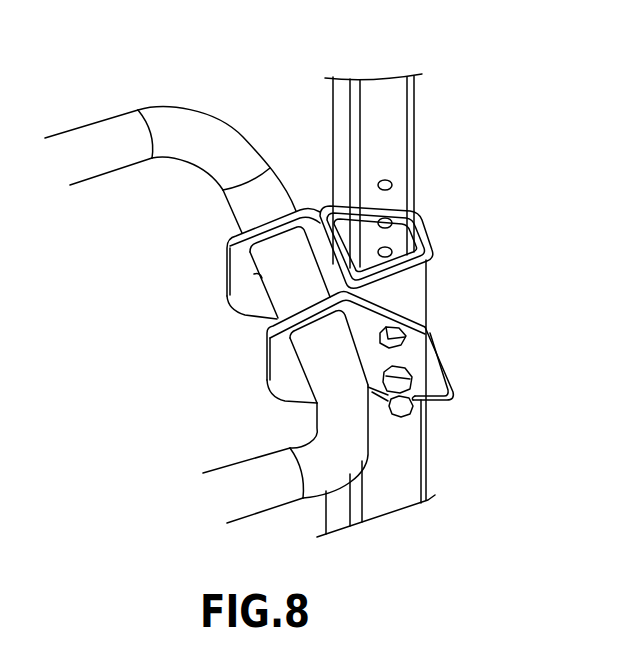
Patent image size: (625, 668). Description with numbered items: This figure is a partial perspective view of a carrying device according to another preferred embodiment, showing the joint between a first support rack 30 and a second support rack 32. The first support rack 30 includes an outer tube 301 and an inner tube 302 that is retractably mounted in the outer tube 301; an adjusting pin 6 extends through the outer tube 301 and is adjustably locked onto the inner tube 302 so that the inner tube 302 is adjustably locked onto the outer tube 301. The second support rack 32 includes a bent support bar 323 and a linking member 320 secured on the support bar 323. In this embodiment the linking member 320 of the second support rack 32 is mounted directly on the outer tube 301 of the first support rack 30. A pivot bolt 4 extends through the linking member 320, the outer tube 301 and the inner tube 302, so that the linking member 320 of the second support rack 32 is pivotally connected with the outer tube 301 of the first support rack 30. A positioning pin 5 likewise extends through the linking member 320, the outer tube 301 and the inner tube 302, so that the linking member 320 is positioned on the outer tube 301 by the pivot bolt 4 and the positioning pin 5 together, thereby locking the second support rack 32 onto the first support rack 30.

The first support rack 30 is at (414, 278).
The outer tube 301 is at (407, 482).
The inner tube 302 is at (400, 167).
The second support rack 32 is at (206, 270).
The support bar 323 is at (193, 120).
The linking member 320 is at (283, 383).
The pivot bolt 4 is at (398, 333).
The positioning pin 5 is at (408, 377).
The adjusting pin 6 is at (420, 412).